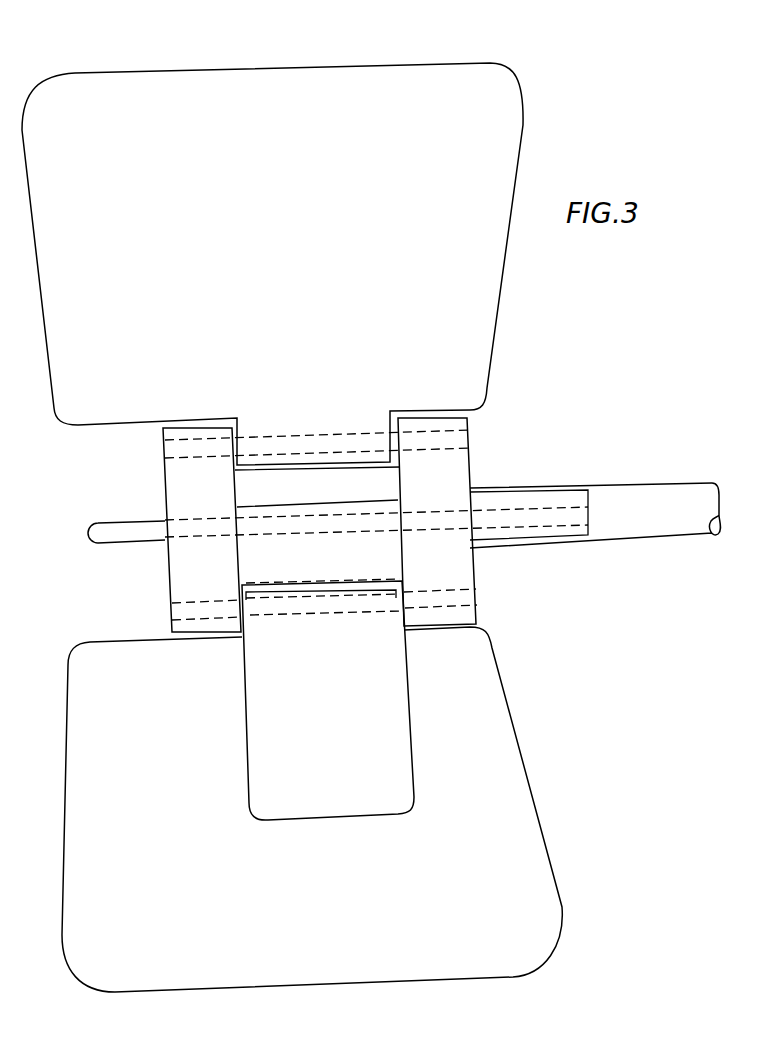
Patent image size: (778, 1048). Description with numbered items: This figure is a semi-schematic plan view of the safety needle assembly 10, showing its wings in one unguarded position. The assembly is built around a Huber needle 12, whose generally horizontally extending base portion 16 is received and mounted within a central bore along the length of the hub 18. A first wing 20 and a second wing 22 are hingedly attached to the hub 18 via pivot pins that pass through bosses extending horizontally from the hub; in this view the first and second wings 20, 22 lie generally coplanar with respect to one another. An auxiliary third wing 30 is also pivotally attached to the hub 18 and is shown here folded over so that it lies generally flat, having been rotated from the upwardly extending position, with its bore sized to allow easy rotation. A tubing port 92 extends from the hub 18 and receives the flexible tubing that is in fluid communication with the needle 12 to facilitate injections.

The safety needle assembly 10 is at (545, 118).
The Huber needle 12 is at (107, 522).
The base portion 16 is at (502, 507).
The hub 18 is at (170, 574).
The first wing 20 is at (425, 60).
The second wing 22 is at (452, 980).
The third wing 30 is at (415, 765).
The tubing port 92 is at (612, 485).